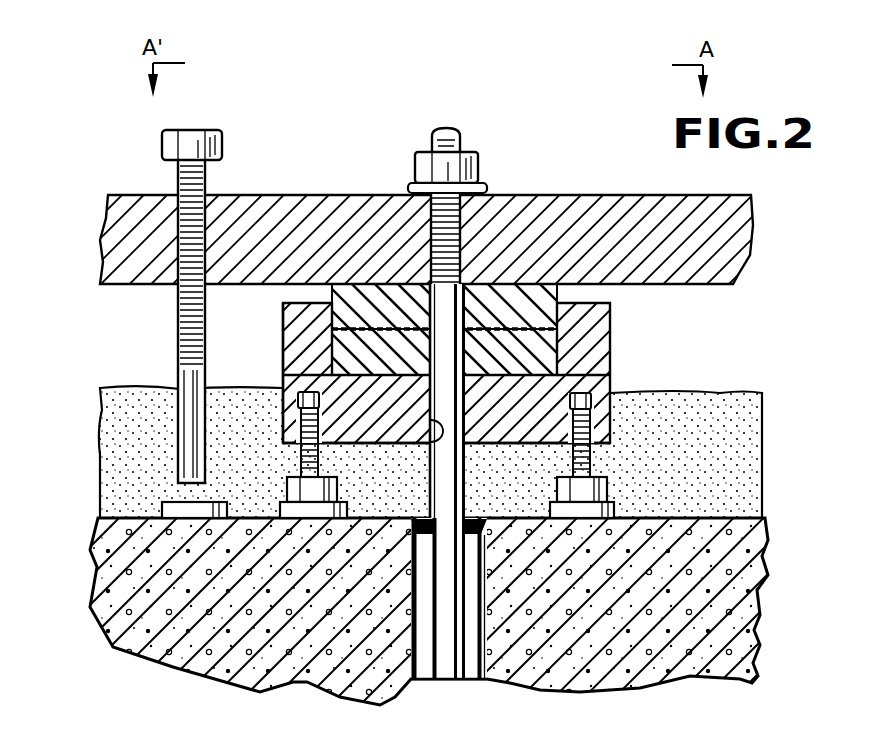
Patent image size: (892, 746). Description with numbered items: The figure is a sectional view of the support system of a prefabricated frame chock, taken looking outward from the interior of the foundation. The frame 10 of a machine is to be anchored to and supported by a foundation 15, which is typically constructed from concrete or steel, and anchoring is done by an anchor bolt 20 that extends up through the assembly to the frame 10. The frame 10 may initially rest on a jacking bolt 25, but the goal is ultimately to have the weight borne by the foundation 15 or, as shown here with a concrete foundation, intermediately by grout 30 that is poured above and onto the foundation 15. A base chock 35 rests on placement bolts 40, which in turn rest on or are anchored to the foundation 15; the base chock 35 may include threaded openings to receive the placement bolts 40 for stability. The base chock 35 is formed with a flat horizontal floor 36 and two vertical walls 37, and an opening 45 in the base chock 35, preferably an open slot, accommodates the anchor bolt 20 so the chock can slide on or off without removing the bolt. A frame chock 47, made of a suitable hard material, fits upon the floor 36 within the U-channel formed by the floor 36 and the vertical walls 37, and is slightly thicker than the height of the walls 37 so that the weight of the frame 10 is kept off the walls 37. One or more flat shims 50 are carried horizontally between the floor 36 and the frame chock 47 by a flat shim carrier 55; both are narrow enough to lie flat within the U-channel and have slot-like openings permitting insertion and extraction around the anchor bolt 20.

The frame 10 is at (730, 246).
The foundation 15 is at (112, 642).
The anchor bolt 20 is at (461, 148).
The jacking bolt 25 is at (222, 147).
The grout 30 is at (740, 437).
The base chock 35 is at (272, 402).
The floor 36 is at (540, 372).
The vertical walls 37 is at (612, 327).
The placement bolts 40 is at (603, 497).
The opening 45 is at (433, 441).
The frame chock 47 is at (338, 290).
The flat shims 50 is at (332, 329).
The flat shim carrier 55 is at (333, 352).